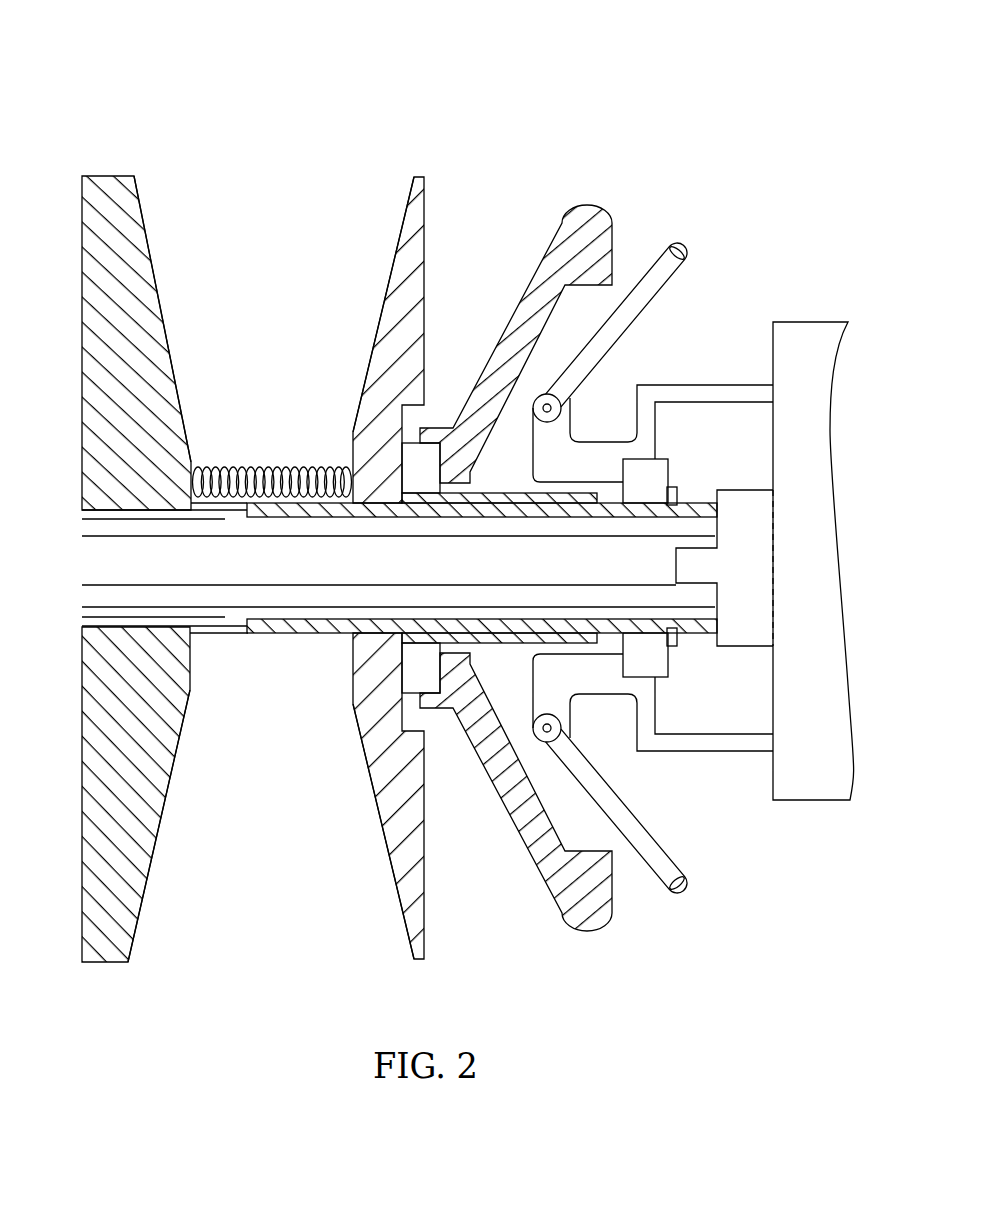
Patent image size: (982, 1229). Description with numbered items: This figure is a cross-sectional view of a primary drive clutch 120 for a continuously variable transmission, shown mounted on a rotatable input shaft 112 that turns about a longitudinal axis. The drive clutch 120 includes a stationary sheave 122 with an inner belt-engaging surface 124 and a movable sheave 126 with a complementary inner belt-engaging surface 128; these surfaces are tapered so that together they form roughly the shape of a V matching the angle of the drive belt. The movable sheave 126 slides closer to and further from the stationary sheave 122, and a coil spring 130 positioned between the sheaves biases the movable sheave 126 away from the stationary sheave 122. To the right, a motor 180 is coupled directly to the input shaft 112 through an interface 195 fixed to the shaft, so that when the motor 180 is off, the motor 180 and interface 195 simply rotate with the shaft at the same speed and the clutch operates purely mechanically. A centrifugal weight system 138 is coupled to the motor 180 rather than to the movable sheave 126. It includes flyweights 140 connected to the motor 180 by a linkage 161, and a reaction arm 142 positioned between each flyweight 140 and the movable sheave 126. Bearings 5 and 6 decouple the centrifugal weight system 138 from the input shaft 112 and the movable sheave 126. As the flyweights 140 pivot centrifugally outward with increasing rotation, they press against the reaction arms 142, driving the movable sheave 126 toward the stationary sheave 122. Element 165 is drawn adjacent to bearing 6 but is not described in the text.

The drive clutch 120 is at (172, 87).
The rotatable input shaft 112 is at (97, 522).
The stationary sheave 122 is at (95, 253).
The inner belt-engaging surface 124 is at (155, 270).
The movable sheave 126 is at (416, 217).
The inner belt-engaging surface 128 is at (393, 263).
The coil spring 130 is at (240, 465).
The centrifugal weight system 138 is at (731, 131).
The flyweight 140 is at (673, 243).
The reaction arm 142 is at (582, 213).
The linkage 161 is at (663, 390).
The stop 165 is at (674, 483).
The motor 180 is at (802, 757).
The interface 195 is at (743, 527).
The bearing 5 is at (413, 462).
The bearing 6 is at (655, 477).